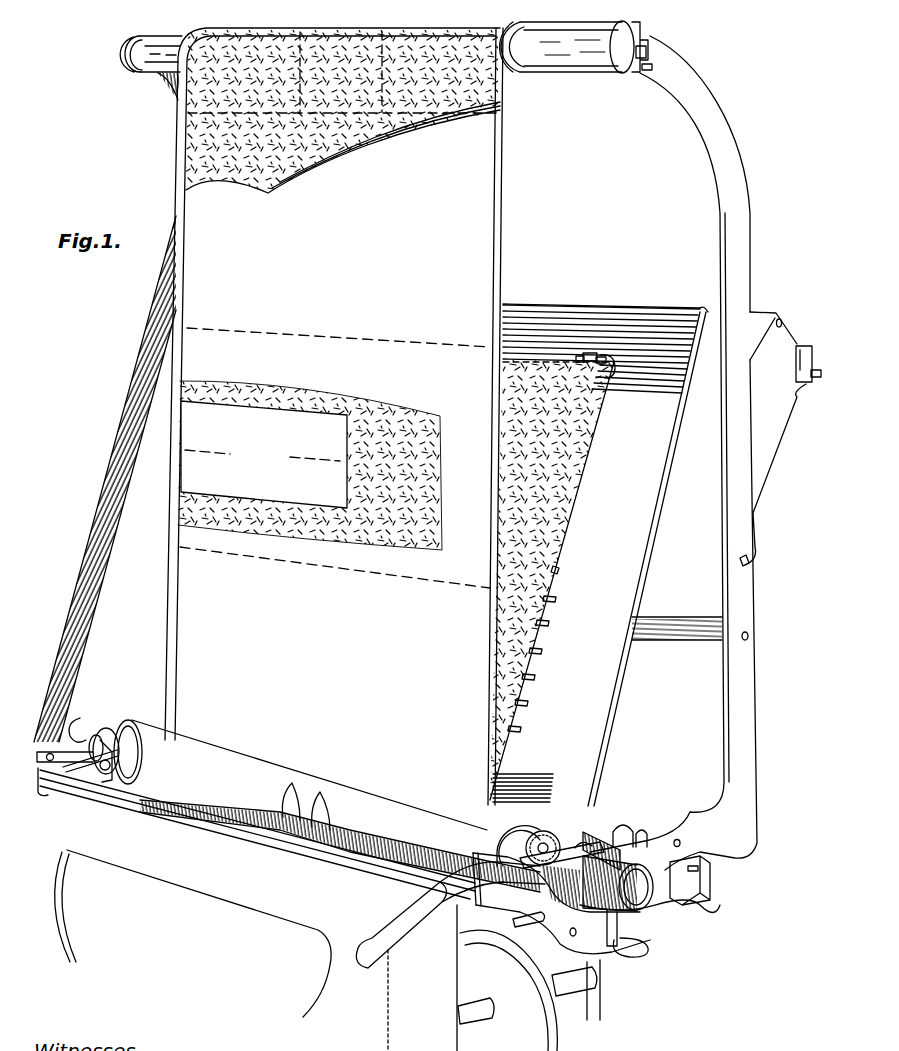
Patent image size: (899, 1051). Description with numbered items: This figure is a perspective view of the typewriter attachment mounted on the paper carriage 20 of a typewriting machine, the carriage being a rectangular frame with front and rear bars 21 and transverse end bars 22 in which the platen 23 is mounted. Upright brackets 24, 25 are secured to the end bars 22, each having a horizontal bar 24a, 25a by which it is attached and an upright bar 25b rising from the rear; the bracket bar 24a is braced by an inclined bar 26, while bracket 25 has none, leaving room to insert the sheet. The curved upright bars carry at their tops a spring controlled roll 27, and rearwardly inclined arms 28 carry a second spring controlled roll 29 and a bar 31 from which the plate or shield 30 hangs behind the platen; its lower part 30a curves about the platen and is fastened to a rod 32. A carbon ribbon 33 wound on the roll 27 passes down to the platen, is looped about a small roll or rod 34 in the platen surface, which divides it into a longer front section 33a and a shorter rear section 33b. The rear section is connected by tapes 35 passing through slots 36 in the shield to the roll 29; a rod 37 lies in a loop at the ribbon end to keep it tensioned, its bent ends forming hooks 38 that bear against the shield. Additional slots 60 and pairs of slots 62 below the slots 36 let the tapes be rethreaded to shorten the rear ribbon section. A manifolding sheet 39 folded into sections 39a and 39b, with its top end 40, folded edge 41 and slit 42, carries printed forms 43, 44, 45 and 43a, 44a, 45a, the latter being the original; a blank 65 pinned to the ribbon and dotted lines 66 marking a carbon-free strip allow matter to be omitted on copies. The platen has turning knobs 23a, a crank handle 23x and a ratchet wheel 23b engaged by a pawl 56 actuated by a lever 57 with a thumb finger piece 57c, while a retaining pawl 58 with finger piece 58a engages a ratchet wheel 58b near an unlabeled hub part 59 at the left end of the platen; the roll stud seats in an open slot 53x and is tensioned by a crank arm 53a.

The paper carriage 20 is at (648, 830).
The front and rear bars 21 is at (220, 822).
The transverse end bars 22 is at (73, 770).
The platen 23 is at (289, 833).
The turning knobs 23a is at (112, 728).
The ratchet wheel 23b is at (592, 846).
The crank handle 23x is at (617, 928).
The upright bracket 24 is at (106, 529).
The horizontal bar 24a is at (66, 742).
The upright bracket 25 is at (747, 673).
The horizontal bar 25a is at (702, 838).
The upright bar 25b is at (777, 267).
The inclined bar 26 is at (128, 425).
The spring controlled roll 27 is at (582, 65).
The rearwardly inclined arms 28 is at (778, 440).
The spring controlled roll 29 is at (683, 377).
The plate or shield 30 is at (650, 503).
The shield lower part 30a is at (545, 918).
The bar 31 is at (763, 322).
The rod 32 is at (550, 922).
The carbon ribbon 33 is at (176, 192).
The front ribbon section 33a is at (176, 490).
The rear ribbon section 33b is at (573, 478).
The roll or rod 34 is at (470, 872).
The tapes 35 is at (599, 354).
The slots 36 is at (589, 352).
The rod 37 is at (606, 382).
The lugs or hooks 38 is at (578, 356).
The manifolding sheet 39 is at (506, 246).
The sheet section 39a is at (305, 168).
The sheet section 39b is at (302, 112).
The top end of the sheet 40 is at (205, 748).
The folded edge 41 is at (488, 655).
The slit 42 is at (503, 200).
The printed form 43 is at (335, 592).
The printed form 43a is at (494, 700).
The printed form 44 is at (310, 453).
The printed form 44a is at (496, 524).
The printed form 45 is at (338, 314).
The original form 45a is at (505, 149).
The crank arm 53a is at (650, 70).
The open slot 53x is at (640, 48).
The pawl 56 is at (548, 832).
The lever 57 is at (450, 872).
The thumb finger piece 57c is at (394, 932).
The retaining pawl 58 is at (107, 760).
The finger piece 58a is at (72, 740).
The ratchet wheel 58b is at (120, 748).
The hub 59 is at (112, 770).
The slots 60 is at (556, 569).
The slots 62 is at (520, 720).
The blank or sheet of paper 65 is at (264, 454).
The dotted lines 66 is at (297, 133).